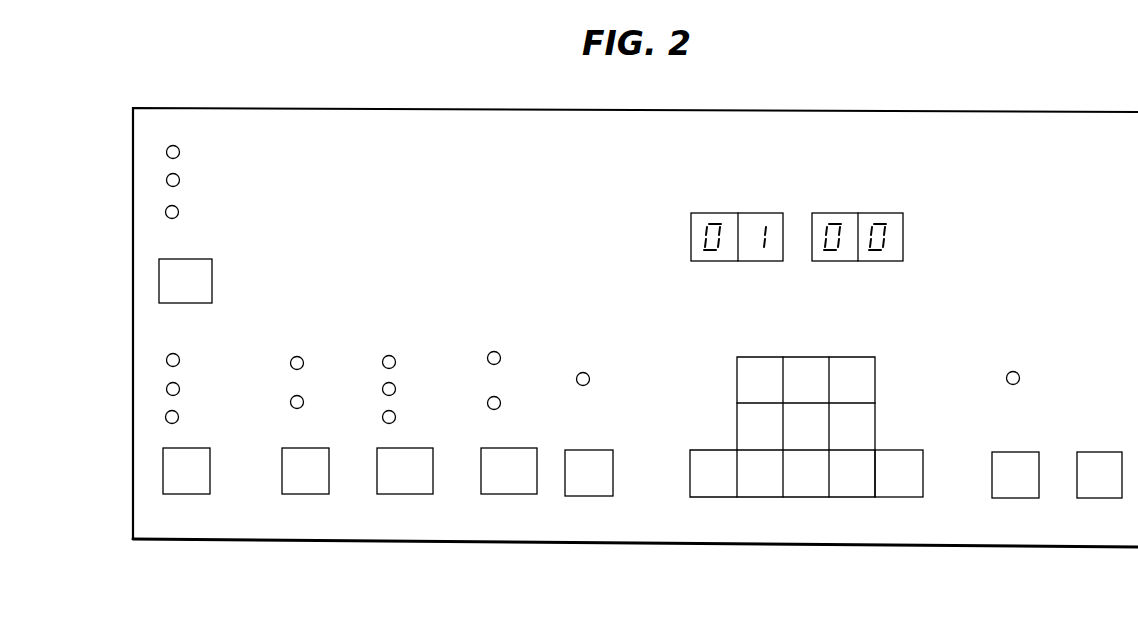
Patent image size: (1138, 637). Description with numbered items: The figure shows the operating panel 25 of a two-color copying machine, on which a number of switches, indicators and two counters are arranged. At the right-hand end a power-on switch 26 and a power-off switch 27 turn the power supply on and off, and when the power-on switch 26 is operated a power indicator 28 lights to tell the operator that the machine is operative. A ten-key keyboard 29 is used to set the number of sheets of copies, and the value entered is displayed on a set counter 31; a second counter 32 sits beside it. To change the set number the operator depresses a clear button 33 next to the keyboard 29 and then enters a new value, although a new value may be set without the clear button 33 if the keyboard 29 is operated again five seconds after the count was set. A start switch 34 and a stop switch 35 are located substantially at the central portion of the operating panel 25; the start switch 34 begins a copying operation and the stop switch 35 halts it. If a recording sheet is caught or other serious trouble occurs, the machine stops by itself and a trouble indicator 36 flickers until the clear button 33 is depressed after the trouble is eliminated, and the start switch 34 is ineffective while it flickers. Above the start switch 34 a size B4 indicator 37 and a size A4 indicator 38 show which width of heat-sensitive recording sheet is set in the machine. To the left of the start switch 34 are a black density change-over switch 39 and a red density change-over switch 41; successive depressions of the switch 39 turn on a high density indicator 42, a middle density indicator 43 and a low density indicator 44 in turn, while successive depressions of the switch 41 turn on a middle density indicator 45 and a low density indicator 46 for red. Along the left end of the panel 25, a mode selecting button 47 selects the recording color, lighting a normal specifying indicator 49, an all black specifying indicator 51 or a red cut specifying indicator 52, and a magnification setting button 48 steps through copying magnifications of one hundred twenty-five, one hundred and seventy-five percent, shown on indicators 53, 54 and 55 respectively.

The operating panel 25 is at (1058, 112).
The power-on switch 26 is at (1089, 498).
The power-off switch 27 is at (1005, 498).
The power indicator 28 is at (1005, 381).
The ten-key keyboard 29 is at (875, 504).
The set counter 31 is at (758, 261).
The display 32 is at (875, 261).
The clear button 33 is at (903, 497).
The start switch 34 is at (497, 494).
The stop switch 35 is at (582, 496).
The trouble indicator 36 is at (579, 385).
The size B4 indicator 37 is at (487, 358).
The size A4 indicator 38 is at (488, 406).
The black density change-over switch 39 is at (394, 494).
The red density change-over switch 41 is at (296, 494).
The high density indicator 42 is at (383, 357).
The middle density indicator 43 is at (384, 383).
The low density indicator 44 is at (382, 419).
The middle density indicator 45 is at (290, 361).
The low density indicator 46 is at (292, 397).
The mode selecting button 47 is at (212, 269).
The magnification setting button 48 is at (177, 494).
The normal specifying indicator 49 is at (166, 152).
The all black specifying indicator 51 is at (167, 184).
The red cut specifying indicator 52 is at (165, 216).
The magnification indicator 53 is at (170, 353).
The magnification indicator 54 is at (170, 382).
The magnification indicator 55 is at (168, 411).